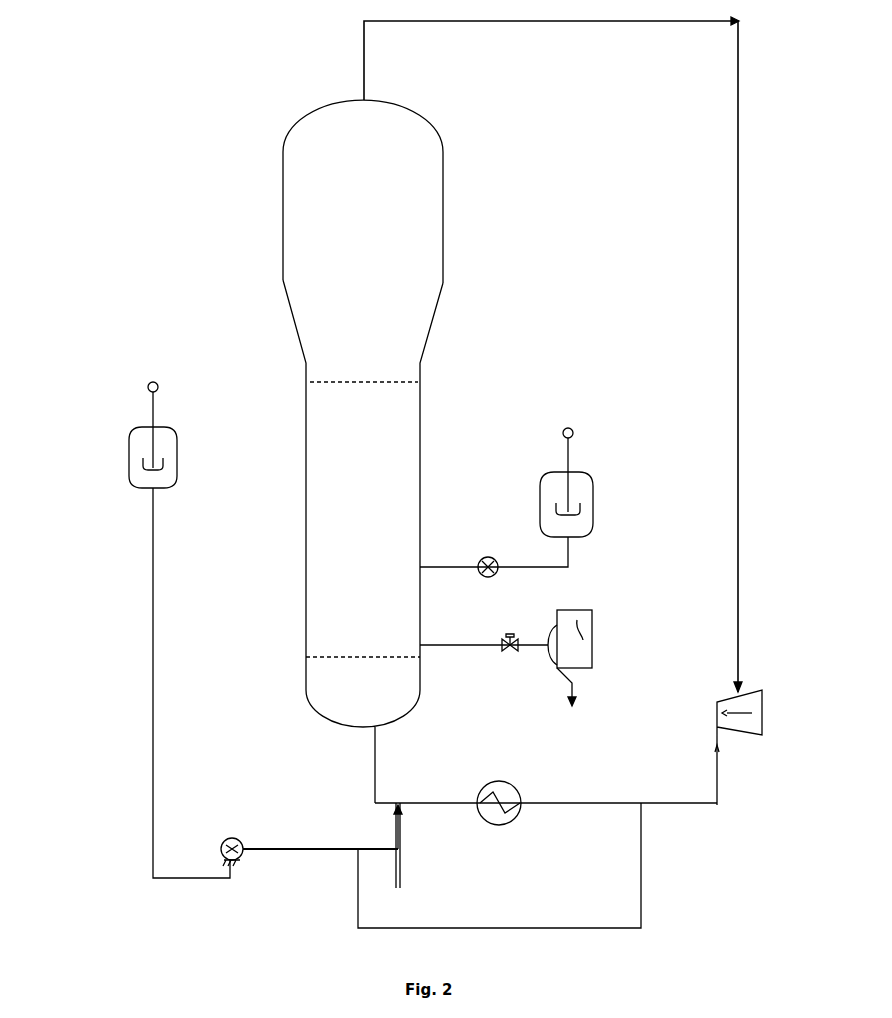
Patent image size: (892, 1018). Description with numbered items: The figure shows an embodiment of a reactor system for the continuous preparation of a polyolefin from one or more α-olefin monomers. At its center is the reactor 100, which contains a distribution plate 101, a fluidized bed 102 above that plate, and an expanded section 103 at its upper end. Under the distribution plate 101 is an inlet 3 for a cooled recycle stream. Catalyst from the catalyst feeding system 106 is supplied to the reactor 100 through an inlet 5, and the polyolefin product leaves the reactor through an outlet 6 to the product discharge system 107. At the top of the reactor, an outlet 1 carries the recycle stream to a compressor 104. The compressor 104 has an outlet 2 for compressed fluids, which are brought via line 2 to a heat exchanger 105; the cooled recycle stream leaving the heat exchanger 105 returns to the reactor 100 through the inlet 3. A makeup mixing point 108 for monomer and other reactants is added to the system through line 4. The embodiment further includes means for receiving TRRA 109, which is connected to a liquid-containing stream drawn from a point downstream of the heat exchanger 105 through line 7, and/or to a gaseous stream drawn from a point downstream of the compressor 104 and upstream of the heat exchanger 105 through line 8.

The outlet for a recycle stream 1 is at (553, 352).
The outlet for compressed fluids 2 is at (546, 803).
The inlet for a cooled recycle stream 3 is at (377, 765).
The line 4 is at (400, 831).
The inlet for providing the catalyst 5 is at (494, 557).
The outlet for providing the polyolefin 6 is at (484, 644).
The line 7 is at (320, 850).
The line 8 is at (499, 871).
The reactor 100 is at (417, 442).
The distribution plate 101 is at (331, 657).
The fluidized bed 102 is at (365, 510).
The expanded section 103 is at (417, 270).
The compressor 104 is at (762, 735).
The heat exchanger 105 is at (517, 820).
The catalyst feeding system 106 is at (598, 500).
The product discharge system 107 is at (592, 620).
The makeup mixing point 108 is at (400, 868).
The means for receiving TRRA 109 is at (130, 432).